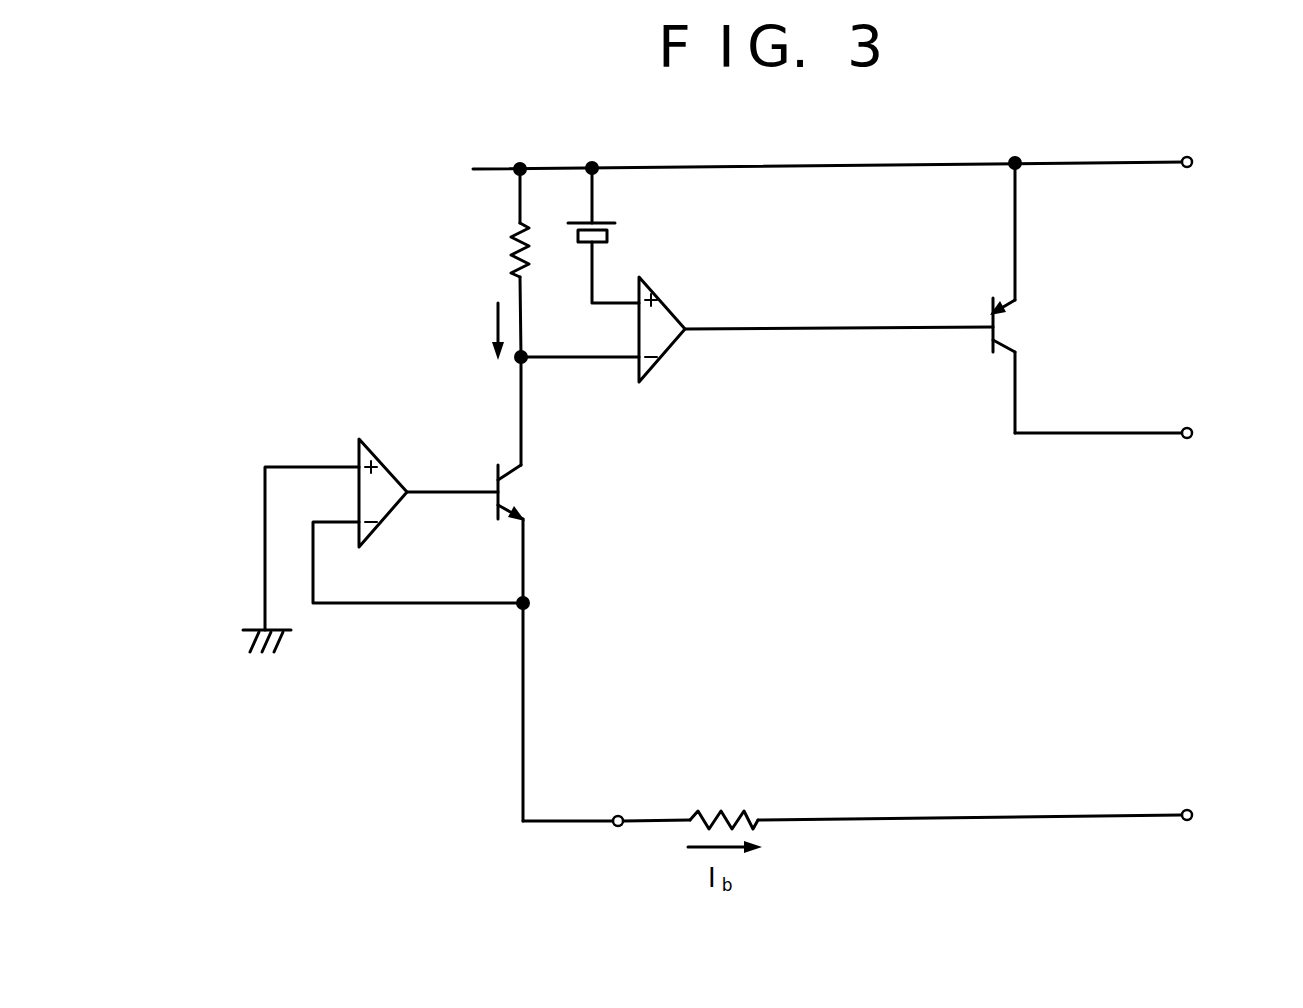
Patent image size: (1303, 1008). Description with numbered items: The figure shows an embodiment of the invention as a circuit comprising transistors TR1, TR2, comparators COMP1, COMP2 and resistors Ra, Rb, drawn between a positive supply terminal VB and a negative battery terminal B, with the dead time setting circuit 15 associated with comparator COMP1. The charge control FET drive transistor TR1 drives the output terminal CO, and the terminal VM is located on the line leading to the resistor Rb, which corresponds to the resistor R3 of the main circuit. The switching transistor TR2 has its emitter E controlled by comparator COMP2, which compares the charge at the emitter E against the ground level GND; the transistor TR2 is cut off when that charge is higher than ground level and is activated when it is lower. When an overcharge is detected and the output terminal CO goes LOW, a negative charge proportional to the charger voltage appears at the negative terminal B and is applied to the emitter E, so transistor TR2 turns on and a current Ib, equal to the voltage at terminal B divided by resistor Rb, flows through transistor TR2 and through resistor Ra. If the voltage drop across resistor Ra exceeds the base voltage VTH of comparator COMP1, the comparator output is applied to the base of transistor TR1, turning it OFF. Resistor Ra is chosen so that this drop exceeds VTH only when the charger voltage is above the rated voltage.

The dead time setting circuit 15 is at (688, 350).
The comparator COMP1 is at (688, 350).
The comparator COMP2 is at (360, 471).
The charge control FET drive transistor TR1 is at (1037, 298).
The switching transistor TR2 is at (543, 534).
The resistor Ra is at (497, 263).
The resistor Rb is at (724, 803).
The resistor R3 is at (753, 803).
The base voltage of comparator COMP1 VTH is at (619, 235).
The VM terminal VM is at (627, 802).
The emitter of transistor TR2 E is at (540, 602).
The ground level GND is at (261, 559).
The VB terminal VB is at (1221, 164).
The CO terminal CO is at (1128, 434).
The −B terminal B is at (1200, 815).
The current Ib is at (476, 331).